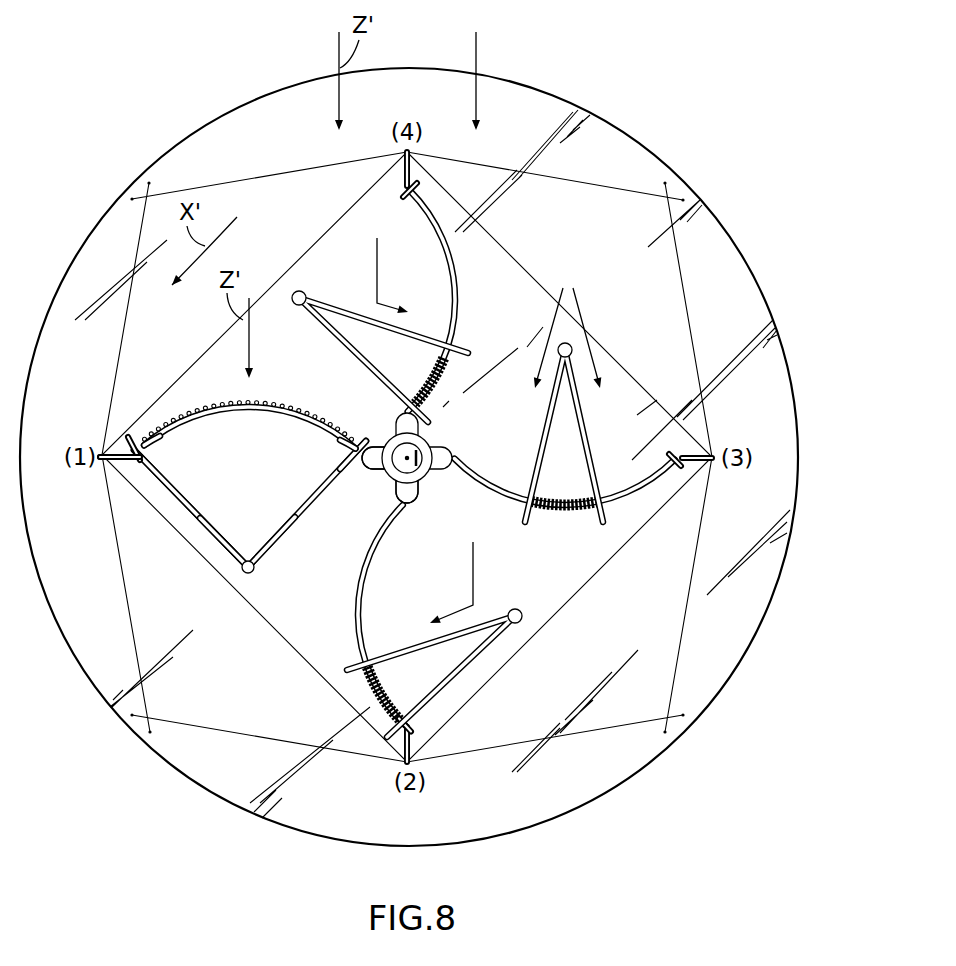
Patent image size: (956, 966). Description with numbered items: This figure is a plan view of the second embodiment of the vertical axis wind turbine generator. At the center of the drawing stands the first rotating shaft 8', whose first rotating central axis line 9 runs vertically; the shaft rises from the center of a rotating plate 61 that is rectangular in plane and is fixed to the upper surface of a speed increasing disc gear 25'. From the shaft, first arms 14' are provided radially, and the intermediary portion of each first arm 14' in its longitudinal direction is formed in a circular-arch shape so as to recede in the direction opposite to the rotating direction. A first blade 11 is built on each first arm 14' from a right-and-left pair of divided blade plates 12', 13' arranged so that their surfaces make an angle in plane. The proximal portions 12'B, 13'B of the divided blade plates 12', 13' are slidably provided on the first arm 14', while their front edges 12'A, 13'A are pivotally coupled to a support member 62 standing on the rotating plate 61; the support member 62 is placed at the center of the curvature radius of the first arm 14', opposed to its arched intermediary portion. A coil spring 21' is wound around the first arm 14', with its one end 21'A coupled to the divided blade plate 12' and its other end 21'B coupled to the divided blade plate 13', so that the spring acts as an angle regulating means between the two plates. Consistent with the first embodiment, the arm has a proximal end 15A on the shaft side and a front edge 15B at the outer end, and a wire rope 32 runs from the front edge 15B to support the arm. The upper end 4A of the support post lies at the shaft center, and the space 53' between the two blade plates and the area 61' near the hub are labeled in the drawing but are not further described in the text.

The speed increasing disc gear 25' is at (409, 457).
The wire rope 32 is at (133, 642).
The upper end 4A is at (397, 490).
The rotating plate 61 is at (574, 432).
The first blade 11 is at (165, 485).
The divided blade plate 13' is at (182, 508).
The front edge 13'A is at (190, 546).
The divided blade plate 12' is at (298, 548).
The front edge 12'A is at (238, 572).
The proximal portion 12'B is at (366, 425).
The first arm 14' is at (249, 382).
The coil spring 21' is at (248, 390).
The one end 21'A is at (333, 406).
The other end 21'B is at (149, 401).
The proximal portion 13'B is at (99, 413).
The front edge 15B is at (112, 454).
The support member 62 is at (242, 570).
The sector region 53' is at (262, 437).
The first rotating central axis line 9 is at (409, 457).
The hub lobe 61' is at (417, 520).
The proximal end 15A is at (373, 457).
The first rotating shaft 8' is at (427, 480).